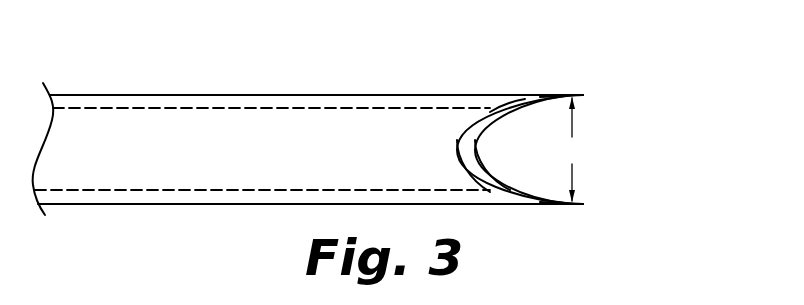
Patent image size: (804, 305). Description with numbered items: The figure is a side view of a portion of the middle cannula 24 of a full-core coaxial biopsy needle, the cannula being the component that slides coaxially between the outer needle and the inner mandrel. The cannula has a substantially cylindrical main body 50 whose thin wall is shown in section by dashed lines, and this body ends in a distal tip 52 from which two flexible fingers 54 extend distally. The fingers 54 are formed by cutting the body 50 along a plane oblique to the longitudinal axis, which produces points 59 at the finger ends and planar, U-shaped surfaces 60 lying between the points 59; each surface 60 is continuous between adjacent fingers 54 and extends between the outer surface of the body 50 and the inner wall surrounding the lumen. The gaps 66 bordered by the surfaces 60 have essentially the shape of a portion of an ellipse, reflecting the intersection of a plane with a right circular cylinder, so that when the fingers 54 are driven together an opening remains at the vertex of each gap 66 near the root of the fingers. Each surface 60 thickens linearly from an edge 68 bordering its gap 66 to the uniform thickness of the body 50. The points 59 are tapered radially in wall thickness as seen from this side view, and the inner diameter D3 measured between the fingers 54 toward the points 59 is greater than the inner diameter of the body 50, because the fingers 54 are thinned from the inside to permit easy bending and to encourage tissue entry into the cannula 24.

The middle cannula component 24 is at (237, 86).
The main body 50 is at (153, 205).
The distal tip 52 is at (580, 74).
The flexible fingers 54 is at (543, 95).
The points 59 is at (583, 95).
The planar U-shaped surfaces 60 is at (482, 176).
The gaps 66 is at (516, 148).
The edge 68 is at (498, 110).
The inner diameter between fingers D3 is at (571, 149).